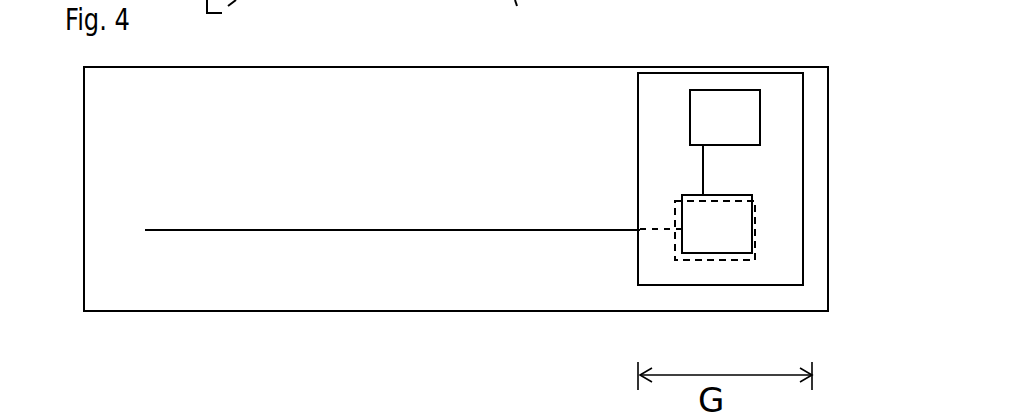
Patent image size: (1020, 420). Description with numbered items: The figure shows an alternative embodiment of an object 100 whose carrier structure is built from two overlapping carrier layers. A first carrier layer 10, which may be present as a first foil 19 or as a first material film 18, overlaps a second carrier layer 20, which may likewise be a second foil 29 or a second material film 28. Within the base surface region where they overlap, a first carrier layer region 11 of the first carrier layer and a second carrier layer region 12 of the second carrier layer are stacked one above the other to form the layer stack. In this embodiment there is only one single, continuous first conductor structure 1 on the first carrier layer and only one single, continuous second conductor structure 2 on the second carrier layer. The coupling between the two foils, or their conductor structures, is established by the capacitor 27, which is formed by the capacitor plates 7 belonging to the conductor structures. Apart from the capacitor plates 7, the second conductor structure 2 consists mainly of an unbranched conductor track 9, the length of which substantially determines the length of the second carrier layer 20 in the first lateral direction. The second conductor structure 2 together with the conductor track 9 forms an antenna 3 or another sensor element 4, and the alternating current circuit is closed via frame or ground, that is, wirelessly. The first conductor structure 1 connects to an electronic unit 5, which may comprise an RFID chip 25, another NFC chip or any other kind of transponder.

The object 100 is at (456, 194).
The second carrier layer 20 is at (456, 216).
The second material film 28 is at (456, 216).
The second foil 29 is at (316, 299).
The second carrier layer region 12 is at (626, 221).
The first carrier layer 10 is at (626, 221).
The first carrier layer region 11 is at (626, 221).
The first material film 18 is at (626, 221).
The first foil 19 is at (650, 158).
The electronic unit 5 is at (758, 80).
The RFID chip 25 is at (727, 100).
The first conductor structure 1 is at (703, 168).
The conductor track 9 is at (278, 230).
The capacitor plates 7 is at (738, 234).
The capacitor 27 is at (738, 227).
The second conductor structure 2 is at (413, 202).
The antenna 3 is at (413, 202).
The sensor element 4 is at (413, 202).